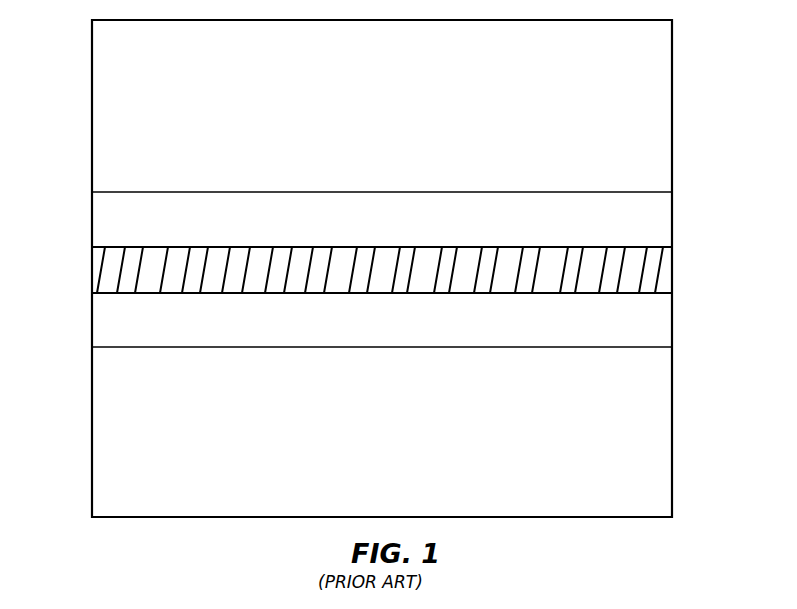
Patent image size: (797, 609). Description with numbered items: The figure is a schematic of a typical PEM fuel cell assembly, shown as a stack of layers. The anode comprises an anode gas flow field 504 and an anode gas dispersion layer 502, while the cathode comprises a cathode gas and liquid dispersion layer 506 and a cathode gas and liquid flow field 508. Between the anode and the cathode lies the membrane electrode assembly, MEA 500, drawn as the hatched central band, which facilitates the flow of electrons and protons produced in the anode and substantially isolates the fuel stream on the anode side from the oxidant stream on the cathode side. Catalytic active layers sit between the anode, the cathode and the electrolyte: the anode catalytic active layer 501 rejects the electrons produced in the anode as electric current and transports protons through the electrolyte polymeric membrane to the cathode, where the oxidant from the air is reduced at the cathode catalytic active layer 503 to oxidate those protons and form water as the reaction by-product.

The membrane electrode assembly 500 is at (678, 270).
The anode catalytic active layer 501 is at (137, 246).
The anode gas dispersion layer 502 is at (676, 210).
The cathode catalytic active layer 503 is at (178, 296).
The anode gas flow field 504 is at (676, 117).
The cathode gas and liquid dispersion layer 506 is at (678, 328).
The cathode gas and liquid flow field 508 is at (676, 415).